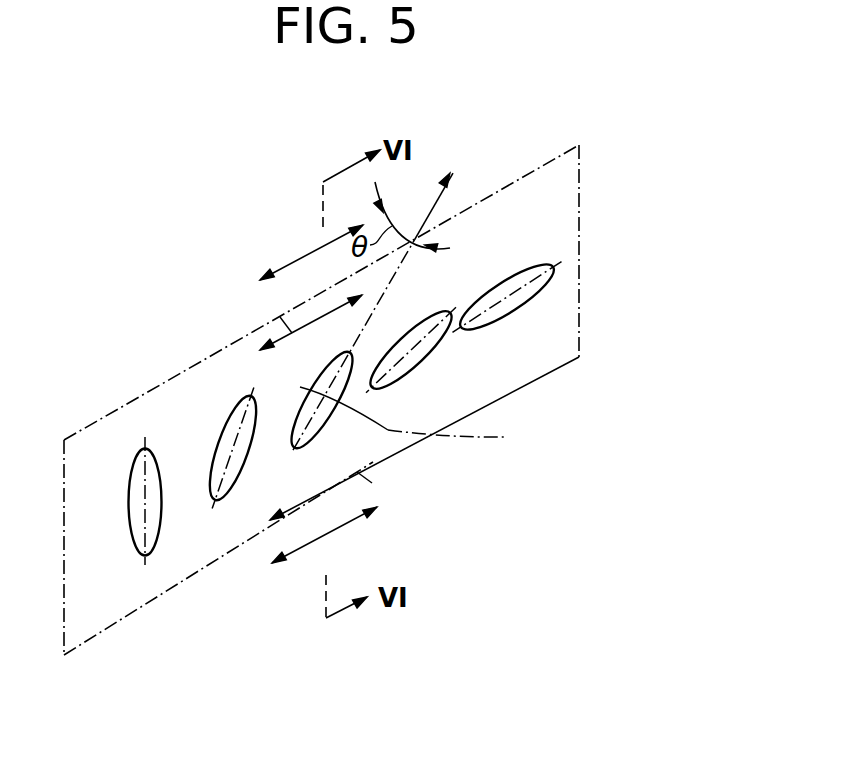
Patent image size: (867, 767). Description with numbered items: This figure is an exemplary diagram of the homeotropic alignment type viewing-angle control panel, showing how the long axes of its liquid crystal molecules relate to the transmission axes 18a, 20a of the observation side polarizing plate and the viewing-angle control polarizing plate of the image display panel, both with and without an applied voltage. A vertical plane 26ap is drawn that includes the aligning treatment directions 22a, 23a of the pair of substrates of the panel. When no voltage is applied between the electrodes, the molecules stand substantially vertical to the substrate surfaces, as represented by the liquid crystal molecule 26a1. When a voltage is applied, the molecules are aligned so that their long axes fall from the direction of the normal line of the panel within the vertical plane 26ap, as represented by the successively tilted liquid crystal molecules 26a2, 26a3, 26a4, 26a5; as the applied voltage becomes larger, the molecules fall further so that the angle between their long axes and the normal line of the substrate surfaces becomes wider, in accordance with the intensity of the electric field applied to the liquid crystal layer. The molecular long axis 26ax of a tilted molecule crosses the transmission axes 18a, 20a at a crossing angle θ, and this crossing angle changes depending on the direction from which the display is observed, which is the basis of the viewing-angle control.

The transmission axis of the observation side polarizing plate 18a is at (350, 523).
The transmission axis of the viewing-angle control polarizing plate 20a is at (310, 256).
The aligning treatment direction 22a is at (280, 317).
The aligning treatment direction 23a is at (372, 483).
The liquid crystal molecule 26a1 is at (130, 538).
The liquid crystal molecule 26a2 is at (213, 507).
The liquid crystal molecule 26a3 is at (300, 387).
The liquid crystal molecule 26a4 is at (433, 352).
The liquid crystal molecule 26a5 is at (523, 303).
The vertical plane 26ap is at (579, 272).
The molecular long axis 26ax is at (440, 420).